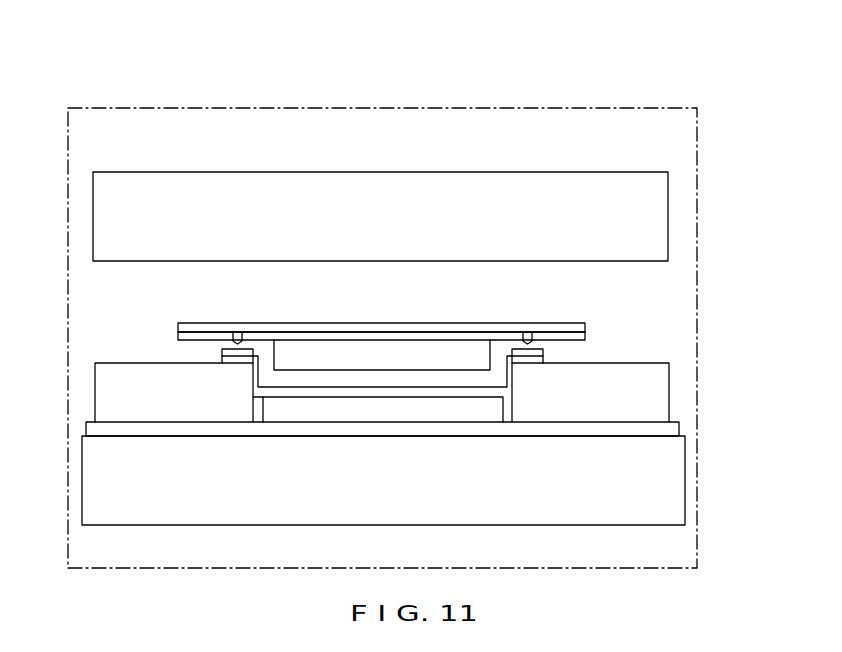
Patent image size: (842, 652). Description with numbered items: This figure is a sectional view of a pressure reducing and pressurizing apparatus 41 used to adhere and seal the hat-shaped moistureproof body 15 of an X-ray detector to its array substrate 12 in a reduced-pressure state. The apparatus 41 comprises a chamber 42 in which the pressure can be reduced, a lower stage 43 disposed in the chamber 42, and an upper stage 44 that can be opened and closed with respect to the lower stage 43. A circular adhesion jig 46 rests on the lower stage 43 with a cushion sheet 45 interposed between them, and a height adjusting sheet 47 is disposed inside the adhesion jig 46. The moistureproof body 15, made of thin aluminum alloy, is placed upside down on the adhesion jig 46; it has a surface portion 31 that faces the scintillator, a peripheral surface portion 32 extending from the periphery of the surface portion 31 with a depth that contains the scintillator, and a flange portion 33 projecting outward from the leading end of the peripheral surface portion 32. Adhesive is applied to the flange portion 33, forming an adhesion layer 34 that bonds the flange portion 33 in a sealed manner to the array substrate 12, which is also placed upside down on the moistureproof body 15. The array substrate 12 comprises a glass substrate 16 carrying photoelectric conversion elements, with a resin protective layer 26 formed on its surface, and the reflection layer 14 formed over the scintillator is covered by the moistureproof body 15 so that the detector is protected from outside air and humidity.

The array substrate 12 is at (381, 302).
The reflection layer 14 is at (348, 353).
The hat-shaped moistureproof body 15 is at (396, 402).
The glass substrate 16 is at (451, 328).
The resin protective layer 26 is at (487, 337).
The surface portion 31 is at (451, 390).
The peripheral surface portion 32 is at (510, 372).
The flange portion 33 is at (531, 358).
The adhesion layer 34 is at (543, 351).
The pressure reducing and pressurizing apparatus 41 is at (382, 104).
The chamber 42 is at (447, 106).
The lower stage 43 is at (685, 482).
The upper stage 44 is at (668, 218).
The cushion sheet 45 is at (679, 430).
The adhesion jig 46 is at (669, 392).
The height adjusting sheet 47 is at (352, 408).